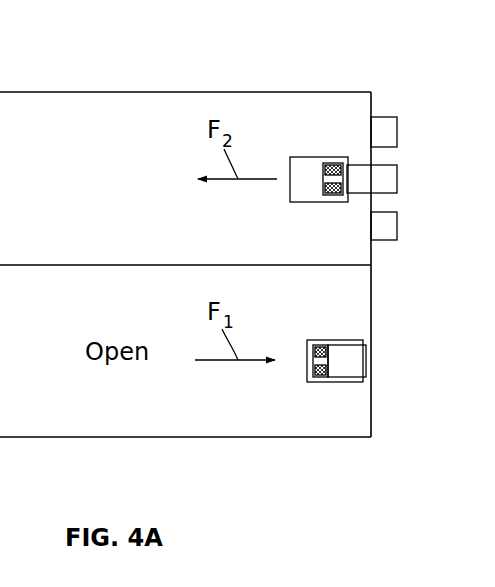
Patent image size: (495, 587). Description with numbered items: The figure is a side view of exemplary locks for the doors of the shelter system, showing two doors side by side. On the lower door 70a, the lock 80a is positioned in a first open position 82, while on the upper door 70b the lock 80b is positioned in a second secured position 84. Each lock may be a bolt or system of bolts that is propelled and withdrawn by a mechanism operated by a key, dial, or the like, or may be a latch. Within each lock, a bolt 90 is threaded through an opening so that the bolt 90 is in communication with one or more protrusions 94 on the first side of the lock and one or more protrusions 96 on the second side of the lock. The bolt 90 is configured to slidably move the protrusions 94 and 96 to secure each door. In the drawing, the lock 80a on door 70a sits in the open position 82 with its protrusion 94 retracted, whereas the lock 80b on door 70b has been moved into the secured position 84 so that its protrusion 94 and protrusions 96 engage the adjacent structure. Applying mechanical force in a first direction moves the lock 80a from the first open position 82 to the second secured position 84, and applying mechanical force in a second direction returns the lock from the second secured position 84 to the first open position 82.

The door 70a is at (126, 418).
The door 70b is at (85, 108).
The lock 80a is at (317, 392).
The lock 80b is at (306, 146).
The first open position 82 is at (377, 360).
The second secured position 84 is at (402, 151).
The bolt 90 is at (331, 163).
The protrusions 94 is at (387, 180).
The protrusions 96 is at (385, 118).